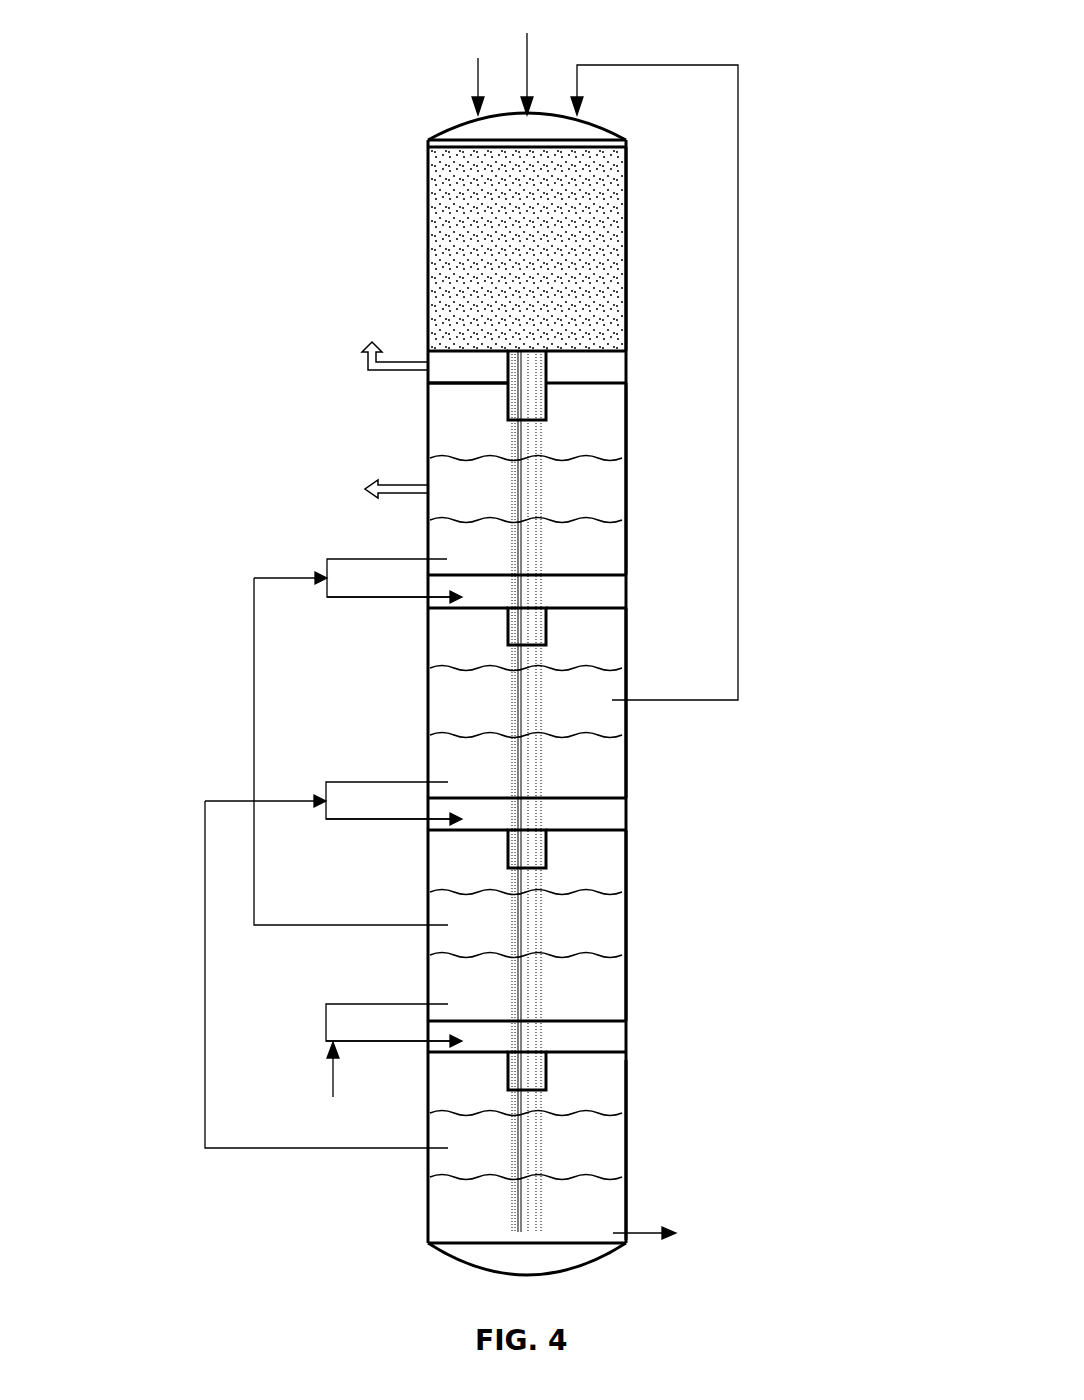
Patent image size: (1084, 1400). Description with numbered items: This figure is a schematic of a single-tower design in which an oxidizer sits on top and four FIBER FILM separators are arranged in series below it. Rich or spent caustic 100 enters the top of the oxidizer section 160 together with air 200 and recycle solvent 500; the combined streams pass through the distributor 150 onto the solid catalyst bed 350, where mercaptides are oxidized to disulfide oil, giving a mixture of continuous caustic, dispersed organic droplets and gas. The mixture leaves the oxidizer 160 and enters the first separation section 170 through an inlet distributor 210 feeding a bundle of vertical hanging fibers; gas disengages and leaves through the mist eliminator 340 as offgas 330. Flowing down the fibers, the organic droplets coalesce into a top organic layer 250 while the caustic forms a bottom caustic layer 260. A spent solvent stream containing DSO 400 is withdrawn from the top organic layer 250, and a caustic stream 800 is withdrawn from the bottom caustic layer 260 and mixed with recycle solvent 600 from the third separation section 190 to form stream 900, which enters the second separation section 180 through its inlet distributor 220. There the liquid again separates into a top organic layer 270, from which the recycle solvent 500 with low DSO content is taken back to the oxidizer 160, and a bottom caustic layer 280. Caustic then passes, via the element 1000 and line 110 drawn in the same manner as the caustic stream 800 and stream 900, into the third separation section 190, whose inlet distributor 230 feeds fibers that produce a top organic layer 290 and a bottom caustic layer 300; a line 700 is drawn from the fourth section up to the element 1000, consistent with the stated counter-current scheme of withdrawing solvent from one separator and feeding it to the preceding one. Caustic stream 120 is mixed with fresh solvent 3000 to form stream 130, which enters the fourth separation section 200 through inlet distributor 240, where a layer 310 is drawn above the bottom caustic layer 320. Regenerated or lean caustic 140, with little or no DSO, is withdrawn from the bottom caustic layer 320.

The rich or spent caustic 100 is at (533, 59).
The fourth separation section 200 is at (665, 1102).
The recycle solvent stream 500 is at (738, 385).
The distributor 150 is at (628, 144).
The solid catalyst bed 350 is at (440, 200).
The oxidizer section 160 is at (628, 235).
The offgas 330 is at (400, 362).
The inlet distributor 210 is at (530, 372).
The mist eliminator 340 is at (450, 388).
The first separation section 170 is at (628, 420).
The spent solvent stream 400 is at (400, 483).
The top organic layer 250 is at (610, 503).
The bottom caustic layer 260 is at (610, 563).
The top organic layer 270 is at (610, 715).
The bottom caustic layer 280 is at (610, 780).
The top organic layer 290 is at (610, 938).
The bottom caustic layer 300 is at (610, 1002).
The liquid zone 310 is at (610, 1160).
The bottom caustic layer 320 is at (610, 1225).
The caustic stream 800 is at (415, 559).
The stream 900 is at (415, 597).
The recycle solvent 600 is at (253, 700).
The inlet distributor 220 is at (546, 632).
The second separation section 180 is at (628, 642).
The second heat exchanger 1000 is at (415, 782).
The heat exchanger outlet line 110 is at (415, 820).
The second recycle line 700 is at (205, 940).
The inlet distributor 230 is at (530, 852).
The third separation section 190 is at (628, 865).
The caustic stream 120 is at (415, 1004).
The stream 130 is at (415, 1042).
The fresh solvent 3000 is at (338, 1086).
The inlet distributor 240 is at (530, 1075).
The regenerated or lean caustic stream 140 is at (672, 1234).